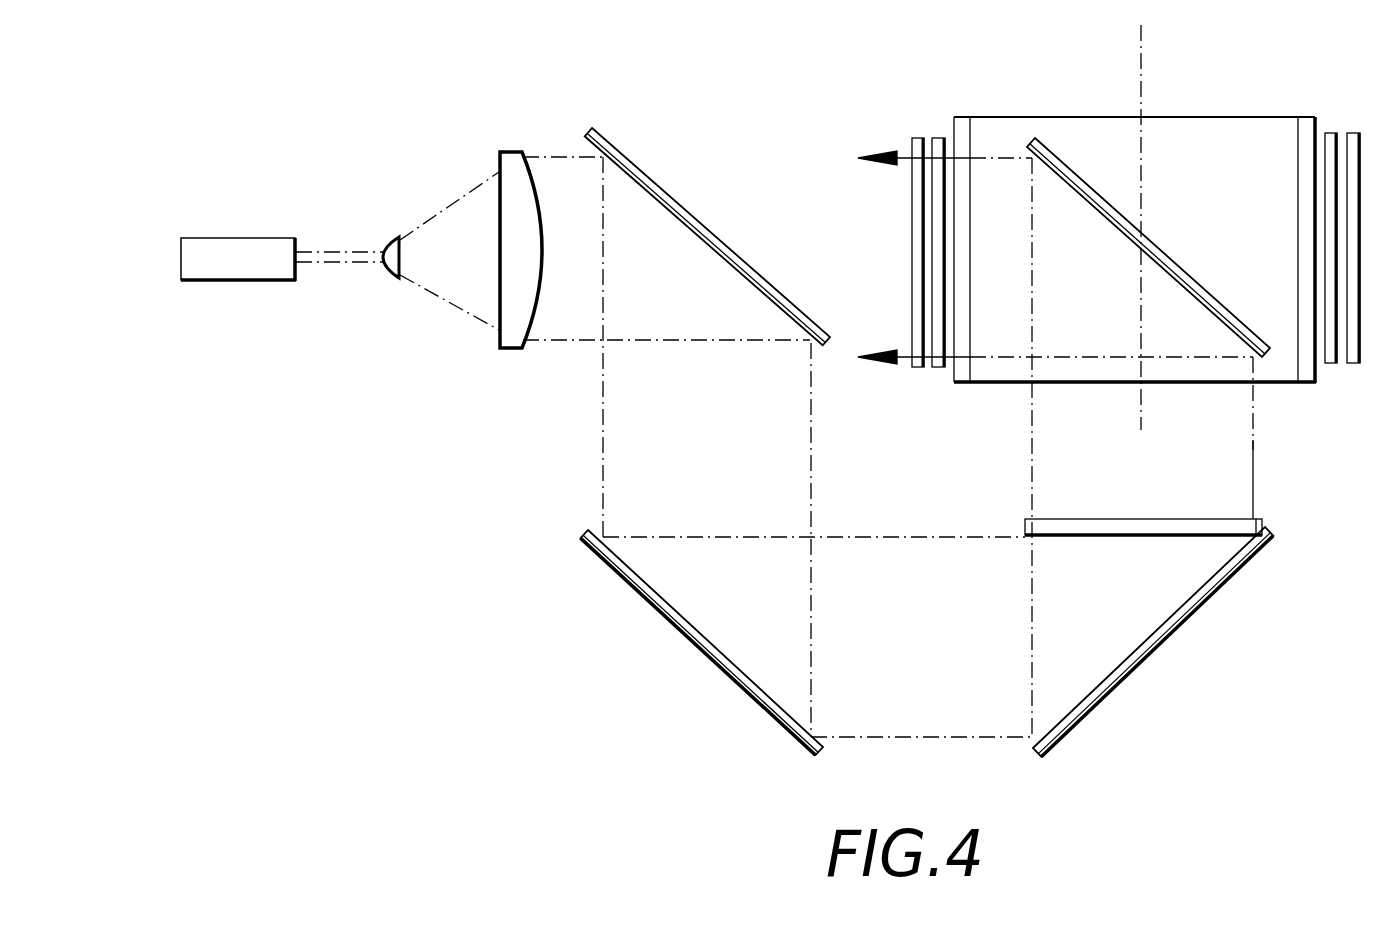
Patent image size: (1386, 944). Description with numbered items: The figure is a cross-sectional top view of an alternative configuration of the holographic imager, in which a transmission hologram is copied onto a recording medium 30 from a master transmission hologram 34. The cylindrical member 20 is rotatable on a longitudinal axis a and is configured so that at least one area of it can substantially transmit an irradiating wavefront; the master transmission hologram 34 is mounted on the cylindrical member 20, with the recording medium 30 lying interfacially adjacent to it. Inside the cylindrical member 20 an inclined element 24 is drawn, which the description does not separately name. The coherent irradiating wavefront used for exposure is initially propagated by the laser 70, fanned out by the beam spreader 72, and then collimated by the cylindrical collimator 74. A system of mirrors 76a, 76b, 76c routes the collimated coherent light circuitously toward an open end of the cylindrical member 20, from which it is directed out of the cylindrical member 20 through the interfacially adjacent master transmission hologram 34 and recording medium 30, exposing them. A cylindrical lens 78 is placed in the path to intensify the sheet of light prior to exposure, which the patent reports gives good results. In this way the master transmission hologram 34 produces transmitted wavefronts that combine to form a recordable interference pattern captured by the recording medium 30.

The cylindrical member 20 is at (954, 119).
The beam splitter 24 is at (1178, 262).
The recording medium 30 is at (918, 367).
The master transmission hologram 34 is at (938, 367).
The laser 70 is at (262, 237).
The beam spreader 72 is at (395, 236).
The cylindrical collimator 74 is at (510, 150).
The mirror 76a is at (740, 255).
The mirror 76b is at (685, 645).
The mirror 76c is at (1165, 648).
The cylindrical lens 78 is at (1125, 540).
The axis a is at (1138, 55).